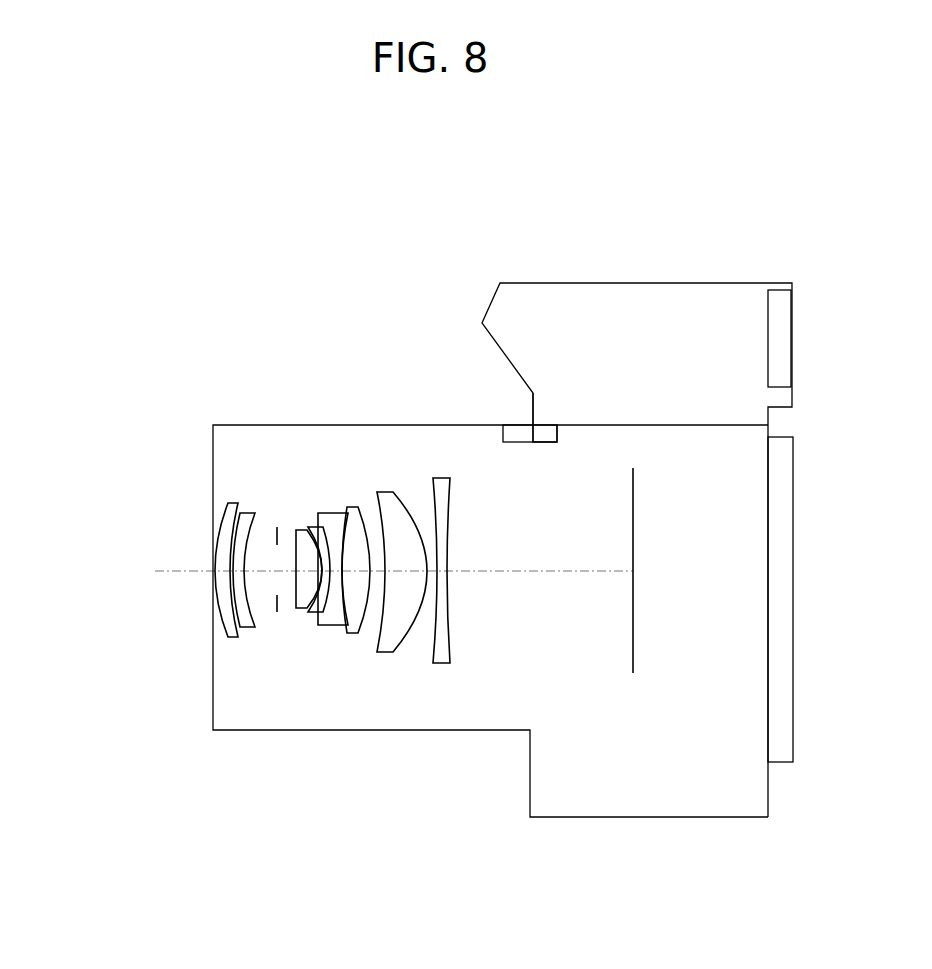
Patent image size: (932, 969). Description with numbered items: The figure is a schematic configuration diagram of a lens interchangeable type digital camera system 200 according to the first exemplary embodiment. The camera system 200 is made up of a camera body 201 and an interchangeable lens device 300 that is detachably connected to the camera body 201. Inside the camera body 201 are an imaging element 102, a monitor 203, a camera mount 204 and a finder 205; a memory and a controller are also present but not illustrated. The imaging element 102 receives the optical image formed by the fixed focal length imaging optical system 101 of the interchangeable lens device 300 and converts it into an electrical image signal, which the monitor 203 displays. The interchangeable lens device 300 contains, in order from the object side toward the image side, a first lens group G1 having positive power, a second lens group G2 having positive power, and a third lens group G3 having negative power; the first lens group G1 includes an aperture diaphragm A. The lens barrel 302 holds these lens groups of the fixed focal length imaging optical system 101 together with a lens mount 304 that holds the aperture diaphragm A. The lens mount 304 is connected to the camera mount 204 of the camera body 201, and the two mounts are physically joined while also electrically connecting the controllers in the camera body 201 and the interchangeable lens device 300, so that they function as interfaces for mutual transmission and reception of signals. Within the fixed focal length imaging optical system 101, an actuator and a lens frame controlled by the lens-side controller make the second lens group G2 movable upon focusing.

The camera system 200 is at (127, 199).
The interchangeable lens device 300 is at (200, 408).
The lens barrel 302 is at (327, 425).
The lens mount 304 is at (515, 433).
The fixed focal length imaging optical system 101 is at (237, 798).
The first lens group G1 is at (365, 672).
The second lens group G2 is at (423, 672).
The third lens group G3 is at (458, 672).
The aperture diaphragm A is at (277, 523).
The camera body 201 is at (787, 273).
The camera mount 204 is at (550, 432).
The finder 205 is at (778, 353).
The monitor 203 is at (778, 562).
The imaging element 102 is at (633, 630).